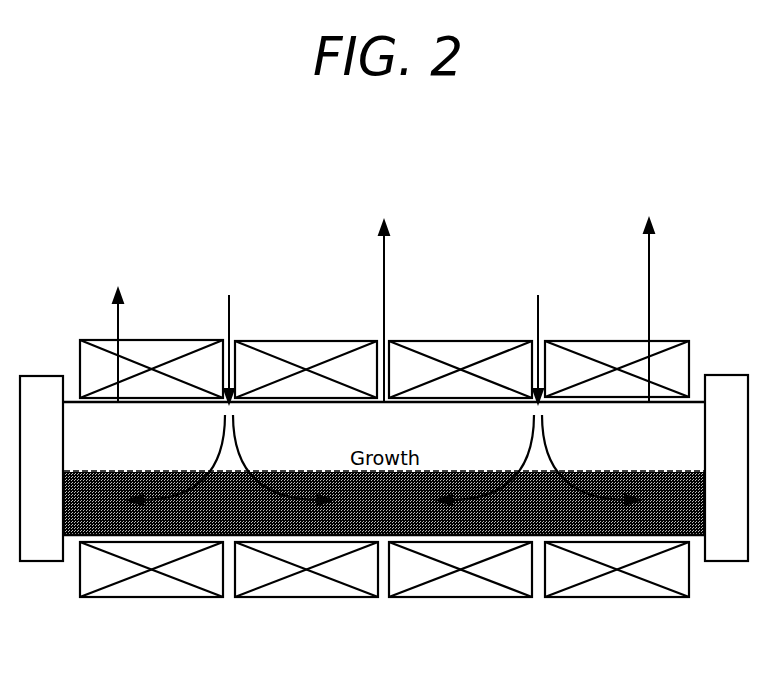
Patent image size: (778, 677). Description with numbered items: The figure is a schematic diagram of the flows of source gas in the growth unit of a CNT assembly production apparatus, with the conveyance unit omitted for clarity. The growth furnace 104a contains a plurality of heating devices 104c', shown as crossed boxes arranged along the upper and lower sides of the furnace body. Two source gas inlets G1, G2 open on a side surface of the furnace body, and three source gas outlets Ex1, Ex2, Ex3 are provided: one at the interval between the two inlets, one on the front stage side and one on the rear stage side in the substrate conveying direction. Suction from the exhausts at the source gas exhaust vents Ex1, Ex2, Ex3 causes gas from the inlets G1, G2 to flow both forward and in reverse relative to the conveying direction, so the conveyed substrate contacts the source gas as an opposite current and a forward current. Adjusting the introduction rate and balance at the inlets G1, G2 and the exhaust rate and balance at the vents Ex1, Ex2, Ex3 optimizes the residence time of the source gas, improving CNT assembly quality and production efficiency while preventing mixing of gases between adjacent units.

The growth furnace 104a is at (72, 398).
The heating devices 104c' is at (384, 603).
The source gas outlet Ex1 is at (119, 334).
The source gas outlet Ex2 is at (383, 300).
The source gas outlet Ex3 is at (650, 300).
The source gas inlet G1 is at (229, 337).
The source gas inlet G2 is at (539, 337).